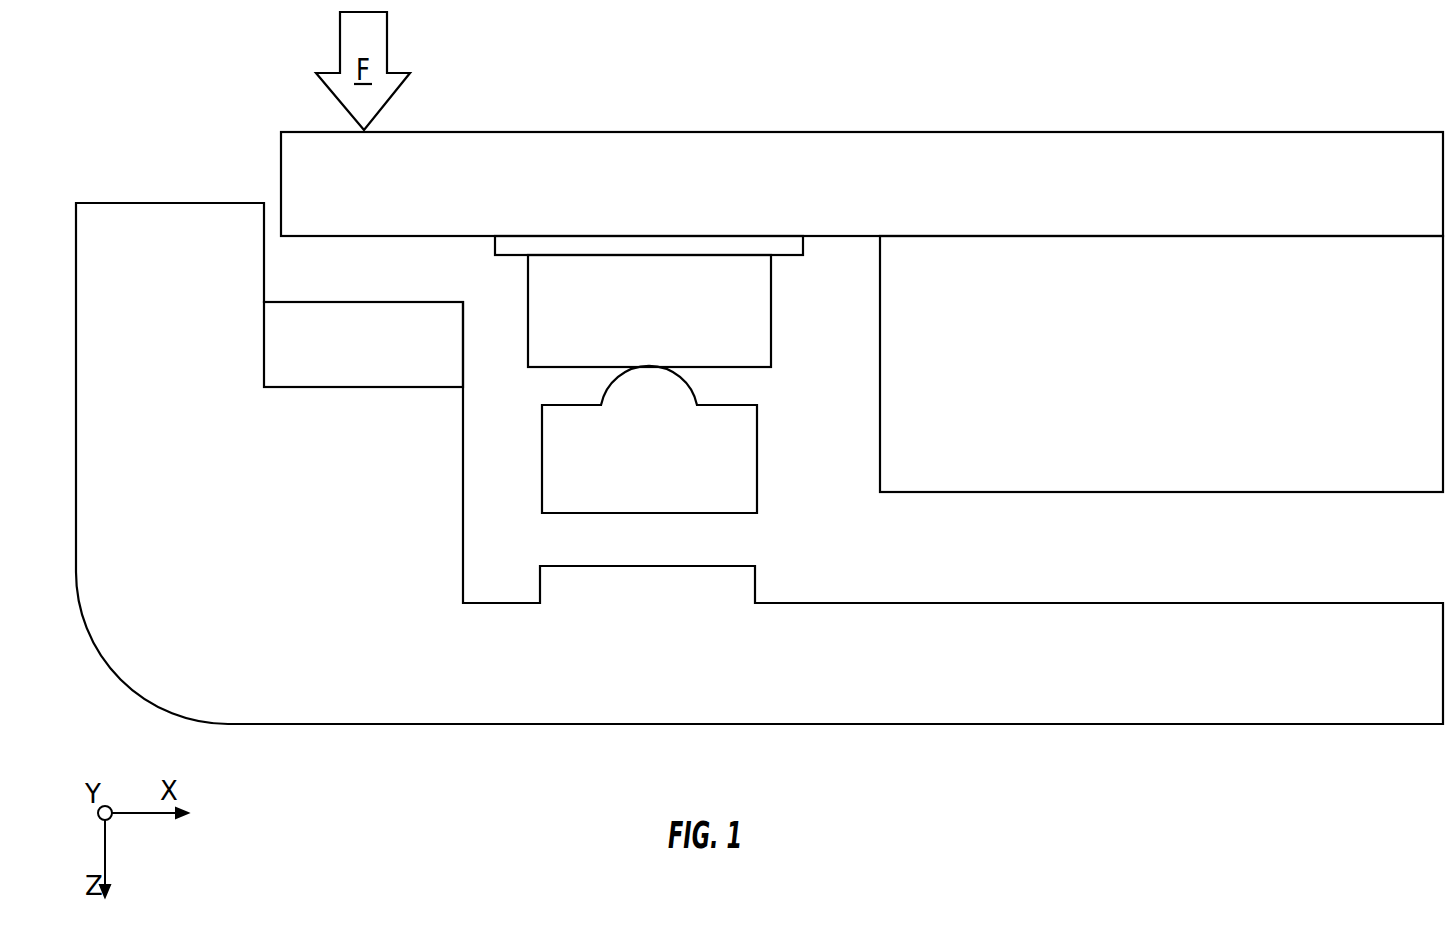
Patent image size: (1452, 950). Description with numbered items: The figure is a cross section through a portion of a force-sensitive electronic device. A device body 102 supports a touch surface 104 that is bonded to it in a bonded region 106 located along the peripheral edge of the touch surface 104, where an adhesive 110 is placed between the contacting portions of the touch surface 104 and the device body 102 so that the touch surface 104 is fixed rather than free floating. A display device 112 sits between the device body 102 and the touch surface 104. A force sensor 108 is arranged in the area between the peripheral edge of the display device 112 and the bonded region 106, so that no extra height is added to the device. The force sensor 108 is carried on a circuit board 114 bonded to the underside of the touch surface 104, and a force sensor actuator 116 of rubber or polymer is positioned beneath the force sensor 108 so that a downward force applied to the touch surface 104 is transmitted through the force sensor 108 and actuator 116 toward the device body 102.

The device body 102 is at (1207, 714).
The touch surface 104 is at (937, 143).
The bonded region 106 is at (385, 283).
The force sensor 108 is at (765, 337).
The adhesive 110 is at (315, 320).
The display device 112 is at (1152, 492).
The circuit board 114 is at (679, 236).
The force sensor actuator 116 is at (752, 462).